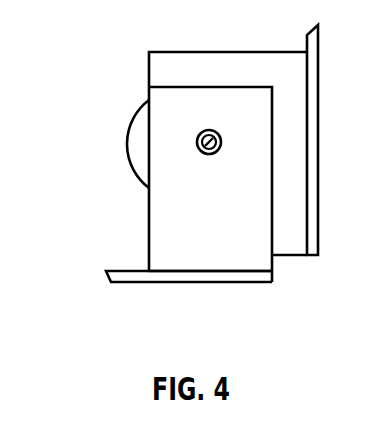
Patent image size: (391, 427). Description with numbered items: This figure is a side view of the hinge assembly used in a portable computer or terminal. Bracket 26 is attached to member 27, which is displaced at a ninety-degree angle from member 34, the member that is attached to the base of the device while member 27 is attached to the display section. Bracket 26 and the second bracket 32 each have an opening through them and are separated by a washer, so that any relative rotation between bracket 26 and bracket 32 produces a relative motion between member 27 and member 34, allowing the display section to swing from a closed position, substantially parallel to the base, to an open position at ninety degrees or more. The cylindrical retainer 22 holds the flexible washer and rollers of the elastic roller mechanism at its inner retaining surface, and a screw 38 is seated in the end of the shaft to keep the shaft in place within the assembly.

The cylindrical retainer 22 is at (132, 142).
The bracket 26 is at (195, 52).
The member 27 is at (318, 62).
The bracket 32 is at (194, 242).
The member 34 is at (126, 283).
The screw 38 is at (217, 152).